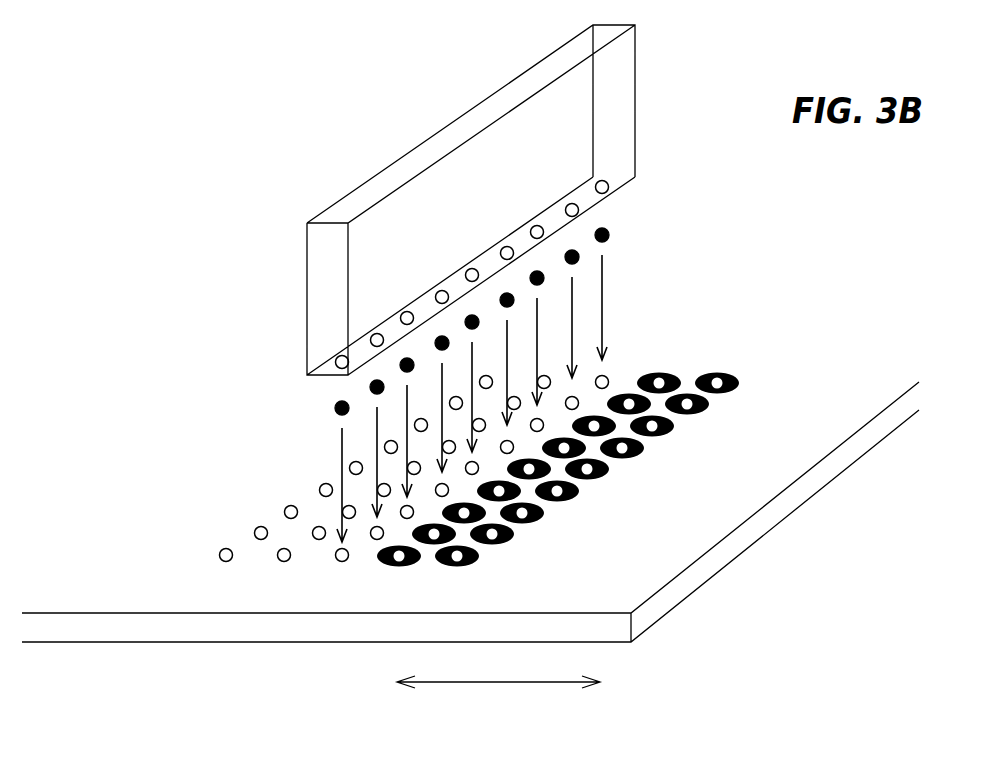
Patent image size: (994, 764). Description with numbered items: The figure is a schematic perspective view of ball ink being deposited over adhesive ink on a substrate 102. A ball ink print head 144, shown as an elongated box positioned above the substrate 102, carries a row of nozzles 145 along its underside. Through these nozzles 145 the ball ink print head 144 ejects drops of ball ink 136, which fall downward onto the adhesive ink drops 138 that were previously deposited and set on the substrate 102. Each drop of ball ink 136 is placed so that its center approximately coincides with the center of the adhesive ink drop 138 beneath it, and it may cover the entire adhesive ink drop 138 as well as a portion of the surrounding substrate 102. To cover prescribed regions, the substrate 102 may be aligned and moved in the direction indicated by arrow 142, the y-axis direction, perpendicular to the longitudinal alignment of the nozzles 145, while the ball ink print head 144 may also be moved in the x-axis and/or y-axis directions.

The substrate 102 is at (760, 538).
The ball ink drops 136 is at (737, 375).
The adhesive ink drops 138 is at (226, 553).
The arrow 142 is at (543, 683).
The ball ink print head 144 is at (447, 125).
The nozzles 145 is at (463, 249).